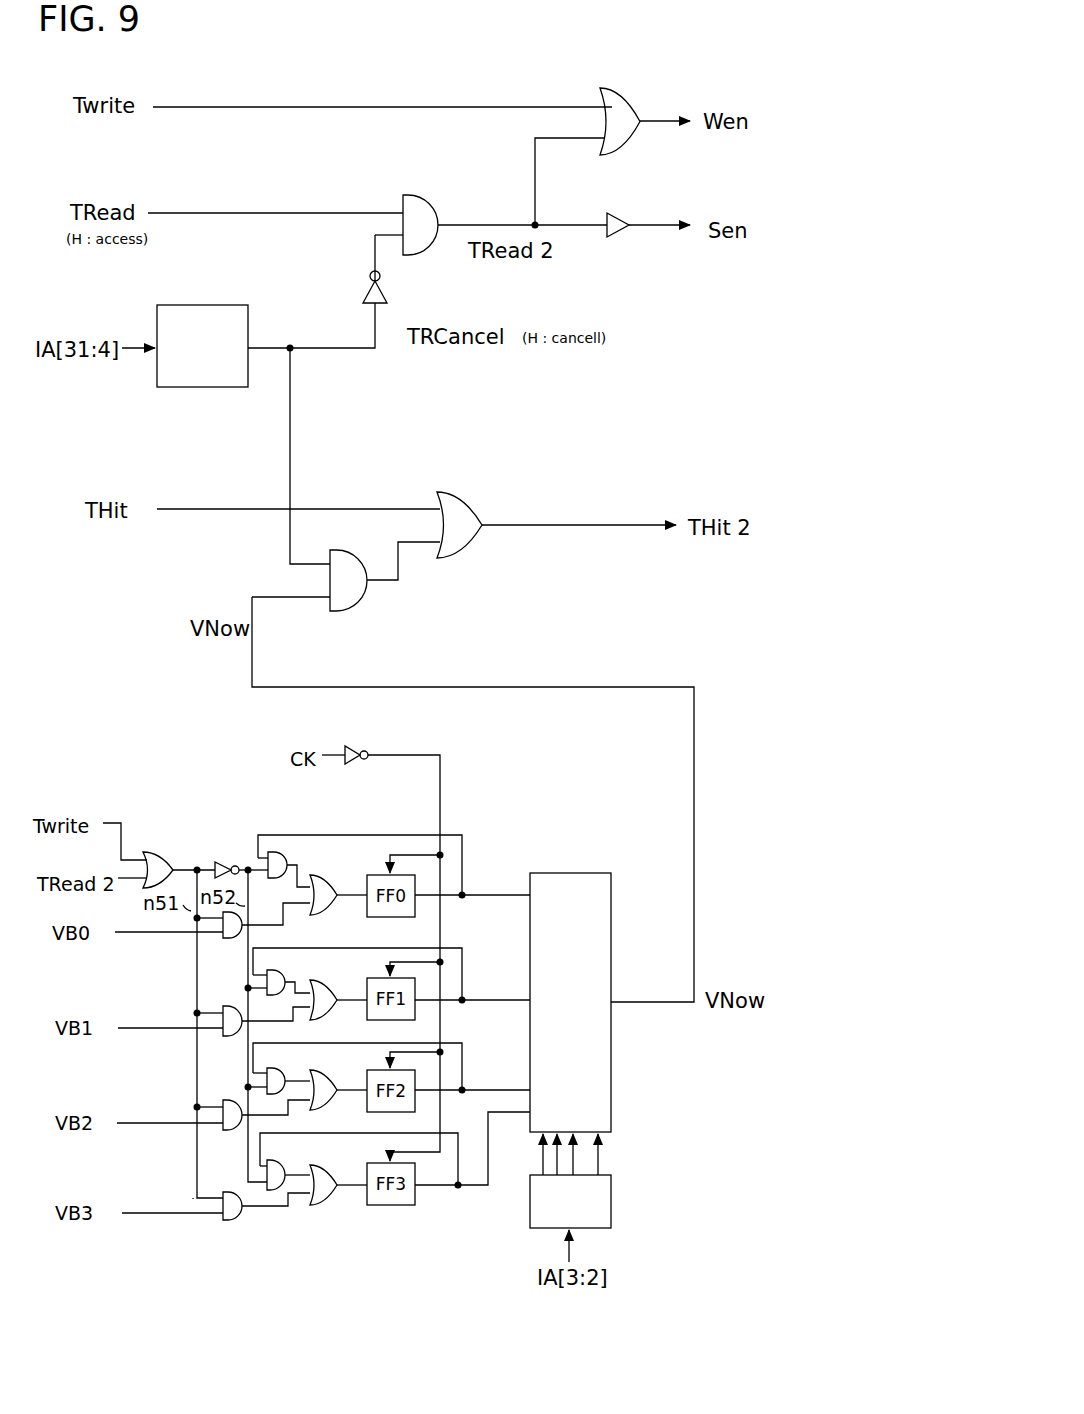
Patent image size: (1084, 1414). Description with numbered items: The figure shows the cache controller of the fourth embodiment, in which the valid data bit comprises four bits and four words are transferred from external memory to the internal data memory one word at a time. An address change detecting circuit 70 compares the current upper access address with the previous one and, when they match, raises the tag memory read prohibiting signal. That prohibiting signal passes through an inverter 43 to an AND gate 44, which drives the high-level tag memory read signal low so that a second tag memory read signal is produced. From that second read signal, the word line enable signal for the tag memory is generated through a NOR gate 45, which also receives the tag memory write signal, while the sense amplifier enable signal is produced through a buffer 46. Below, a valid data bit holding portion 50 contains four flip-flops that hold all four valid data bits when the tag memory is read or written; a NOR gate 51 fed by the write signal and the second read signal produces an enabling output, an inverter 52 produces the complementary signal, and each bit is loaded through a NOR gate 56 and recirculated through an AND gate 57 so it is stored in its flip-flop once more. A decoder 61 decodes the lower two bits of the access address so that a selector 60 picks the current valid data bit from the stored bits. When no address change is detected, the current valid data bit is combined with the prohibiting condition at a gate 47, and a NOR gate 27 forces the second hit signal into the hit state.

The NOR gate 27 is at (556, 513).
The inverter 43 is at (334, 291).
The AND gate 44 is at (491, 214).
The NOR gate 45 is at (645, 112).
The buffer 46 is at (648, 215).
The gate 47 is at (346, 587).
The valid data bit holding portion 50 is at (319, 1226).
The NOR gate 51 is at (179, 857).
The inverter 52 is at (241, 854).
The NOR gate 56 is at (338, 882).
The AND gate 57 is at (286, 857).
The selector 60 is at (570, 1002).
The decoder 61 is at (570, 1181).
The address change detecting circuit 70 is at (219, 305).